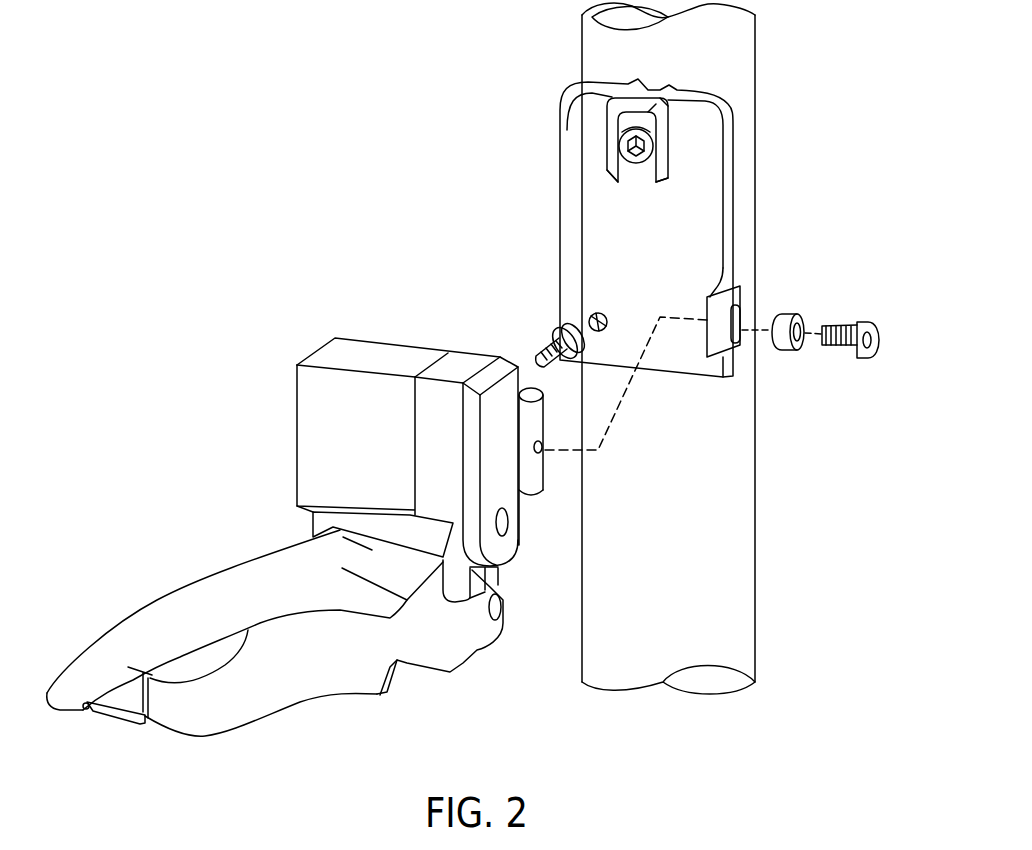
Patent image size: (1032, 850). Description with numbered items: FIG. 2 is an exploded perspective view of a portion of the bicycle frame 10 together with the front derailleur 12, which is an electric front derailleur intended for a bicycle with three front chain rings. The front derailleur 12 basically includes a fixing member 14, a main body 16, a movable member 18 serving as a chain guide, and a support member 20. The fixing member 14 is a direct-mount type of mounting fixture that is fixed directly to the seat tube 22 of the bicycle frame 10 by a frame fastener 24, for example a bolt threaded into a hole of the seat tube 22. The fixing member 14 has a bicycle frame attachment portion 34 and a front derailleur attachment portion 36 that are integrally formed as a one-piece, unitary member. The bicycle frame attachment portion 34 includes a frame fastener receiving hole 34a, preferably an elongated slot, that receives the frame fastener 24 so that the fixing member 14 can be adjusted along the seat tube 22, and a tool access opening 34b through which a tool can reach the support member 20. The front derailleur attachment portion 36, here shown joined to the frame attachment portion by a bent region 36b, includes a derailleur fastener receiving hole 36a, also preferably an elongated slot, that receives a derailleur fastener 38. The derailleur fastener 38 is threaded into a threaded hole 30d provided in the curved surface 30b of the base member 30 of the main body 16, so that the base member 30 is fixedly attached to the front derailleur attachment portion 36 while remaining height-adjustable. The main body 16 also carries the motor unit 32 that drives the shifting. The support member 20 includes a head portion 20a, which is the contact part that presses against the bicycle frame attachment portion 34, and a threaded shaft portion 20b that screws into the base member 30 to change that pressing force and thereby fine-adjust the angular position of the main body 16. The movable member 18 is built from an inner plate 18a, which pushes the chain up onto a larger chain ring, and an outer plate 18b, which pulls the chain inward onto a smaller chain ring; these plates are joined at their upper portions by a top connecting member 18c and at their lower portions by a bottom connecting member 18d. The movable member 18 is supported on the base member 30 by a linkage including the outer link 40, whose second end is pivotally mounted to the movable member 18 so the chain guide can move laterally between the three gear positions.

The bicycle frame 10 is at (657, 348).
The front derailleur 12 is at (377, 526).
The fixing member 14 is at (678, 243).
The main body 16 is at (440, 458).
The movable member 18 is at (275, 650).
The inner plate 18a is at (290, 673).
The outer plate 18b is at (200, 620).
The top connecting member 18c is at (423, 557).
The bottom connecting member 18d is at (110, 705).
The support member 20 is at (504, 324).
The head portion 20a is at (563, 328).
The shaft portion 20b is at (555, 345).
The seat tube 22 is at (757, 64).
The frame fastener 24 is at (645, 162).
The base member 30 is at (461, 458).
The curved surface 30b is at (533, 477).
The threaded hole 30d is at (542, 452).
The motor unit 32 is at (286, 457).
The bicycle frame attachment portion 34 is at (745, 160).
The frame fastener receiving hole 34a is at (627, 115).
The tool access opening 34b is at (596, 312).
The front derailleur attachment portion 36 is at (738, 346).
The derailleur fastener receiving hole 36a is at (742, 322).
The bent portion of tab 36b is at (720, 285).
The derailleur fastener 38 is at (857, 358).
The outer link 40 is at (500, 574).